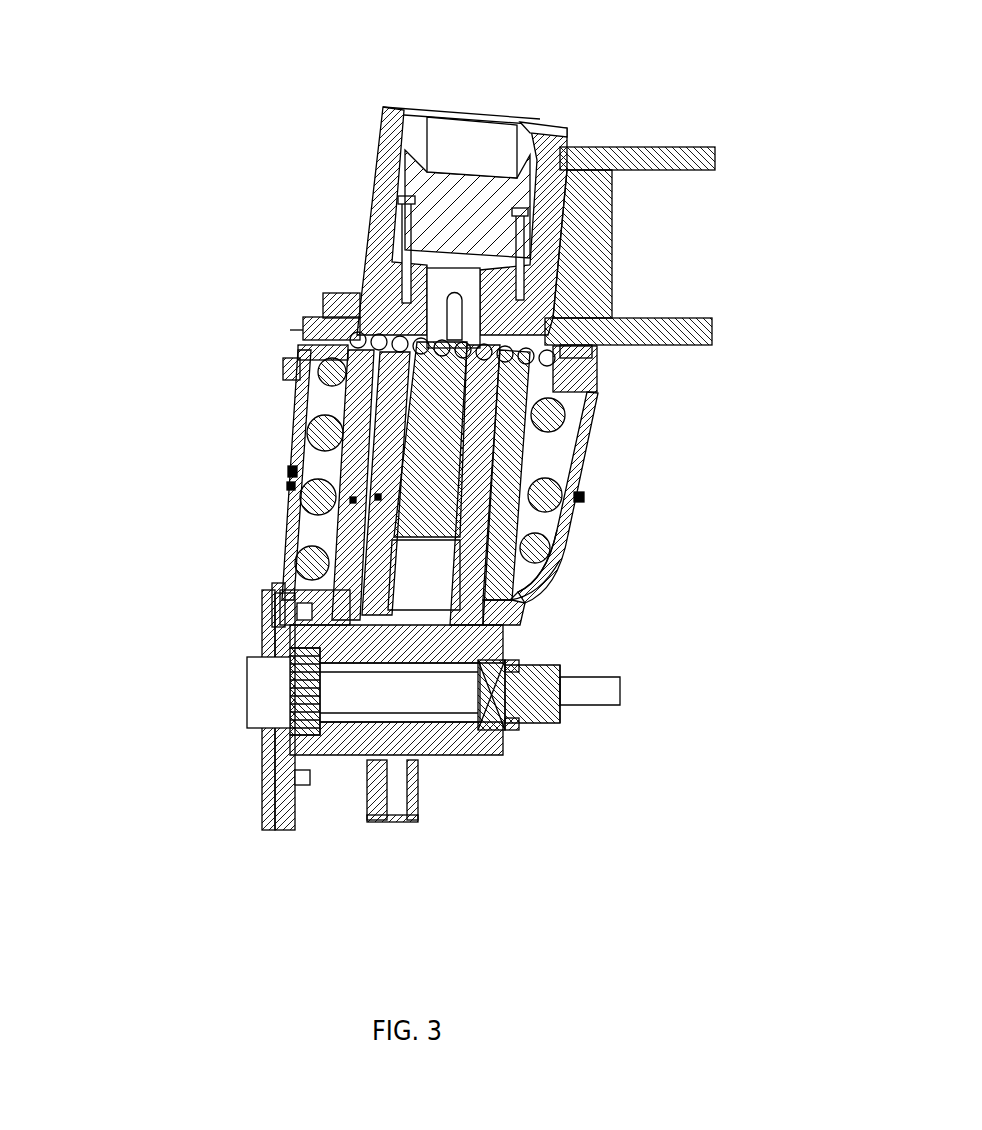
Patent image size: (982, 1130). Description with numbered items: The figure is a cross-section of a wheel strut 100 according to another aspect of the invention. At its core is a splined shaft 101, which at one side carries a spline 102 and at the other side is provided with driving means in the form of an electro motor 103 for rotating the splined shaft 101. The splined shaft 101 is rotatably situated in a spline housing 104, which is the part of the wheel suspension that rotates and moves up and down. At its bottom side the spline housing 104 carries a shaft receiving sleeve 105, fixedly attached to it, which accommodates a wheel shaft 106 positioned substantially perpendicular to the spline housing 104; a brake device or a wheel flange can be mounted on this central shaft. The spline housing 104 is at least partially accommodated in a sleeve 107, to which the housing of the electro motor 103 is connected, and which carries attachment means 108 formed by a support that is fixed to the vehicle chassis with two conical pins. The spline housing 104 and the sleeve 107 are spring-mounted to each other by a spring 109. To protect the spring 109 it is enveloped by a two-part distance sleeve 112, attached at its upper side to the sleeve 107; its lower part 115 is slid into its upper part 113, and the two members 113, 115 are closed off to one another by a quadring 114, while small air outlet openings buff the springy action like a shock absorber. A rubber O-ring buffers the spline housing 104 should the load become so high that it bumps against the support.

The wheel strut 100 is at (262, 230).
The splined shaft 101 is at (440, 410).
The spline 102 is at (568, 533).
The electro motor 103 is at (451, 190).
The spline housing 104 is at (580, 497).
The shaft receiving sleeve 105 is at (425, 757).
The wheel shaft 106 is at (265, 697).
The sleeve 107 is at (555, 130).
The attachment means 108 is at (700, 160).
The spring 109 is at (677, 574).
The distance sleeve 112 is at (247, 505).
The upper part of the distance sleeve 113 is at (588, 456).
The quadring 114 is at (287, 470).
The lower part of the distance sleeve 115 is at (664, 638).
The rubber O-ring is at (157, 605).